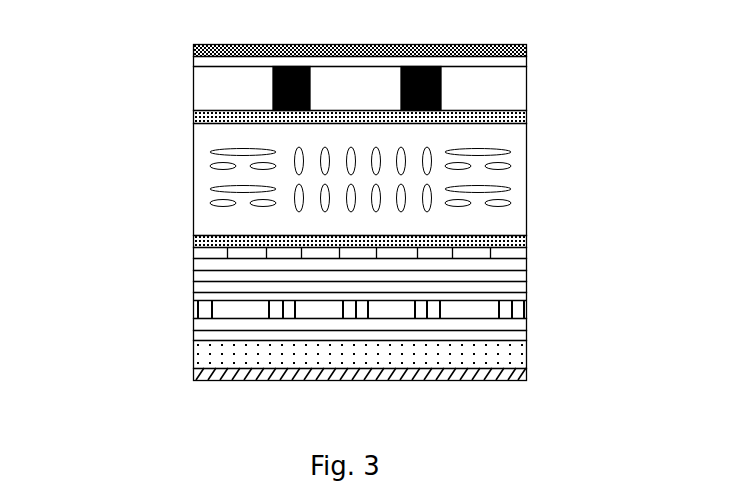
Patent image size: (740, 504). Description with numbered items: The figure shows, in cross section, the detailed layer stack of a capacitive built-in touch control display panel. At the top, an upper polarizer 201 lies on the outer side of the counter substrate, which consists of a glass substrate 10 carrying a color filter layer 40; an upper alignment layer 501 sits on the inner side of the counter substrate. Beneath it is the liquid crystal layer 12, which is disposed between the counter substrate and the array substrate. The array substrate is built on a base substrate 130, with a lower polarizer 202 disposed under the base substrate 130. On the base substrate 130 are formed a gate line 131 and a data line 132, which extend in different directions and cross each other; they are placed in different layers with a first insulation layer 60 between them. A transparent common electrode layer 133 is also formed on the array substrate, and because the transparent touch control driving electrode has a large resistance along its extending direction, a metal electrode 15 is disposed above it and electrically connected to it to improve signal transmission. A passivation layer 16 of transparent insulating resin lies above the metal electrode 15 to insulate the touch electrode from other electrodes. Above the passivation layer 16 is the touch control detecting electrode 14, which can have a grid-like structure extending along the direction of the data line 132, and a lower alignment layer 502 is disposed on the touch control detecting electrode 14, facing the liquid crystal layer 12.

The upper polarizer 201 is at (410, 46).
The glass substrate 10 is at (493, 62).
The color filter layer 40 is at (503, 87).
The upper alignment layer 501 is at (210, 118).
The liquid crystal layer 12 is at (463, 187).
The lower alignment layer 502 is at (210, 238).
The touch control detecting electrode 14 is at (513, 252).
The passivation layer 16 is at (212, 263).
The metal electrode 15 is at (512, 272).
The common electrode layer 133 is at (212, 285).
The data line 132 is at (510, 313).
The first insulation layer 60 is at (508, 323).
The gate line 131 is at (235, 335).
The base substrate 130 is at (512, 352).
The lower polarizer 202 is at (370, 370).